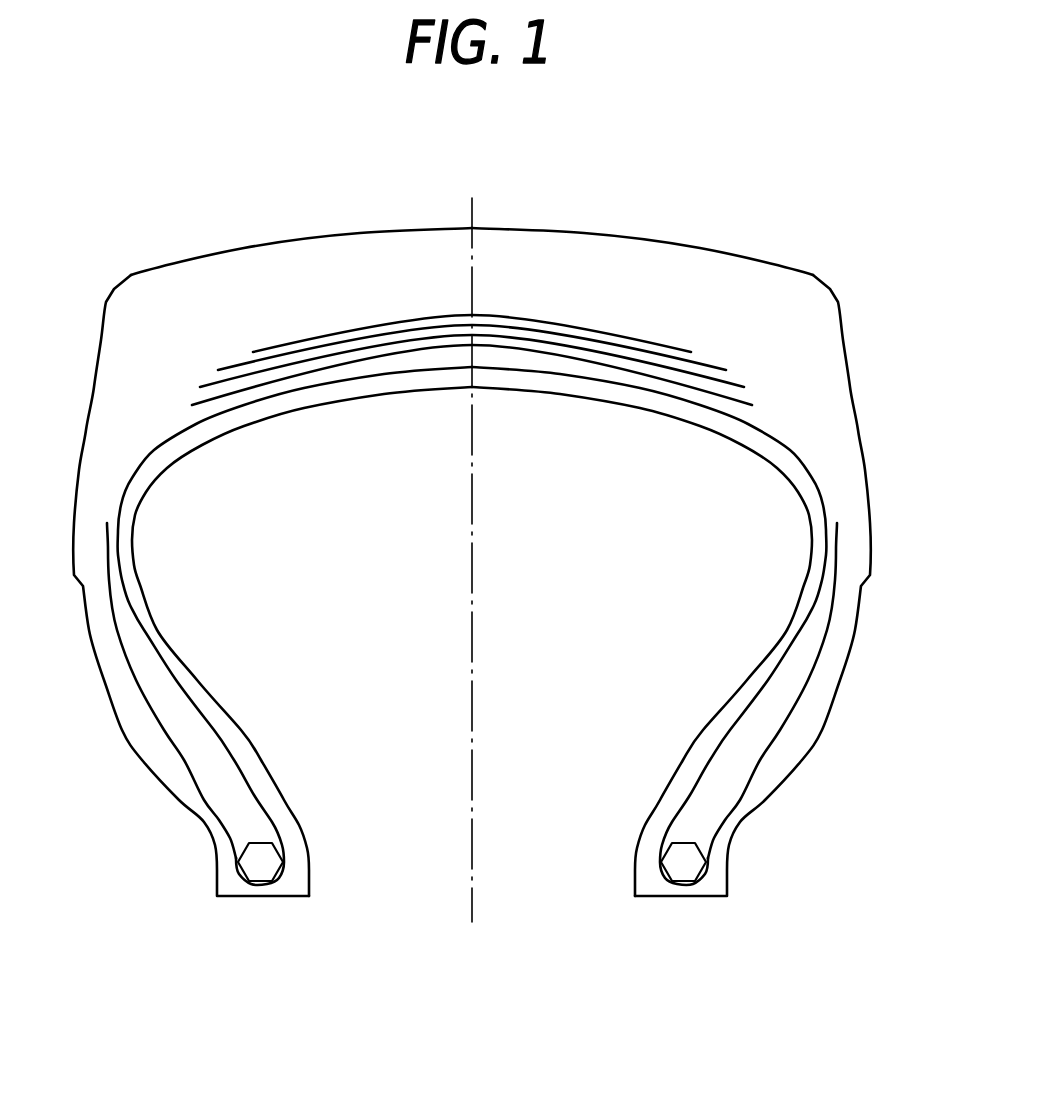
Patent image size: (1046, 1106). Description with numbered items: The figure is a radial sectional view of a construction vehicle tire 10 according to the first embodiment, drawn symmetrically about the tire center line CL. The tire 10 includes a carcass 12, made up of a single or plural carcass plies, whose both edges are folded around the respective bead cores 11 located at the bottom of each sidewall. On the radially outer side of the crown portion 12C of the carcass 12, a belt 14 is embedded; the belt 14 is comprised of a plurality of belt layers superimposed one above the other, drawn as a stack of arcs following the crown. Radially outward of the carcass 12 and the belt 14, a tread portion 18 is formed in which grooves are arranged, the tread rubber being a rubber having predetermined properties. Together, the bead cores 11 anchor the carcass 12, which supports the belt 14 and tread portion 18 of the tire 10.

The construction vehicle tire 10 is at (472, 499).
The bead core 11 is at (687, 868).
The carcass 12 is at (792, 447).
The crown portion 12C is at (460, 367).
The belt 14 is at (758, 352).
The tread portion 18 is at (663, 243).
The tire equatorial plane / center line CL is at (475, 217).